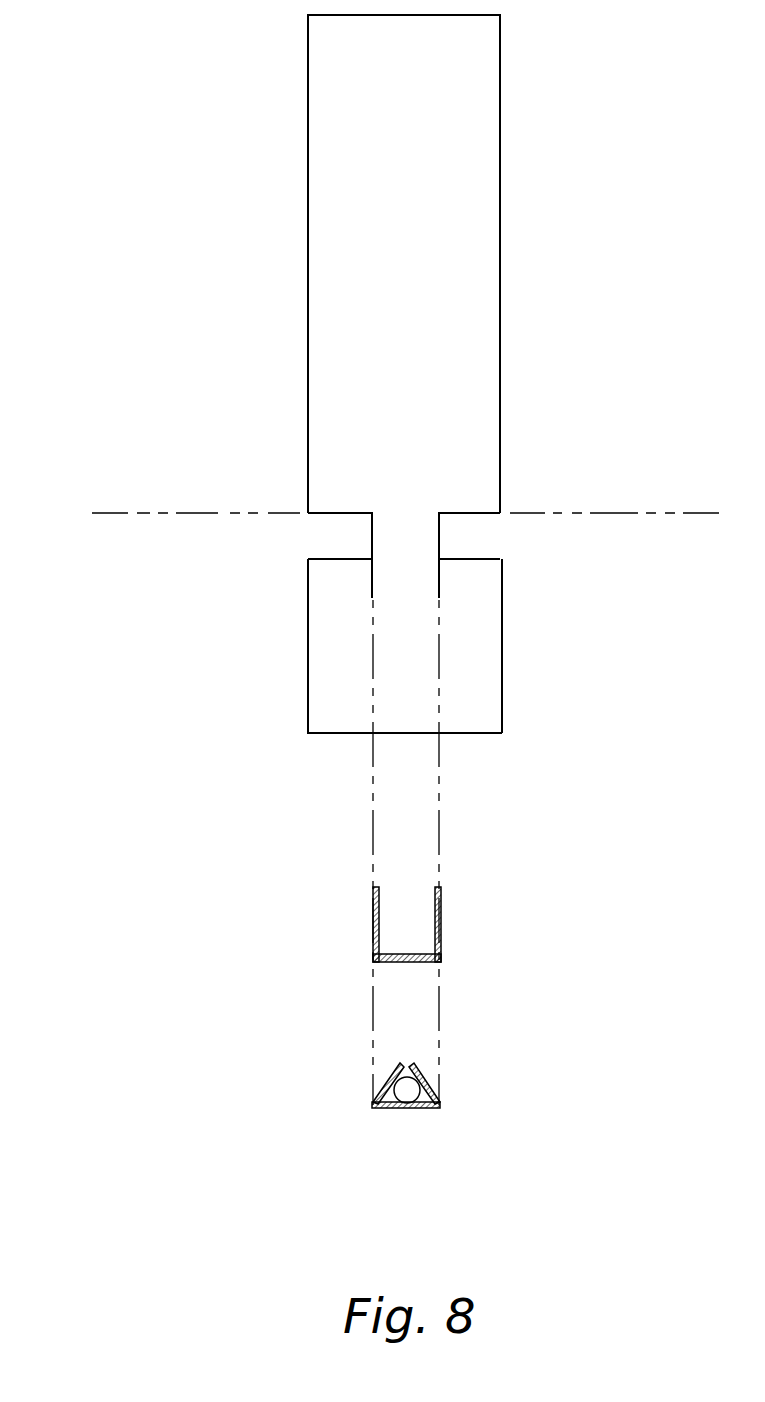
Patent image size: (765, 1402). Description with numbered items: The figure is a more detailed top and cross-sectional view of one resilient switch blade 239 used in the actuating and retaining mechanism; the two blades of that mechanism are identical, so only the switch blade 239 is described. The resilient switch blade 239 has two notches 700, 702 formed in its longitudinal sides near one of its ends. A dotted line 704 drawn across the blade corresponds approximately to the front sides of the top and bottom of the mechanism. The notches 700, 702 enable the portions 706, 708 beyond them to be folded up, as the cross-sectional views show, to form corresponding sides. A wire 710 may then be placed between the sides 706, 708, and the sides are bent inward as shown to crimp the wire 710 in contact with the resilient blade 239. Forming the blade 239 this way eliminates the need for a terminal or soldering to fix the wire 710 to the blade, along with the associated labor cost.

The resilient switch blade 239 is at (562, 262).
The dotted line 704 is at (118, 512).
The notch 700 is at (318, 530).
The notch 702 is at (482, 528).
The portion (side) 706 is at (318, 683).
The portion (side) 708 is at (490, 658).
The wire 710 is at (388, 1108).